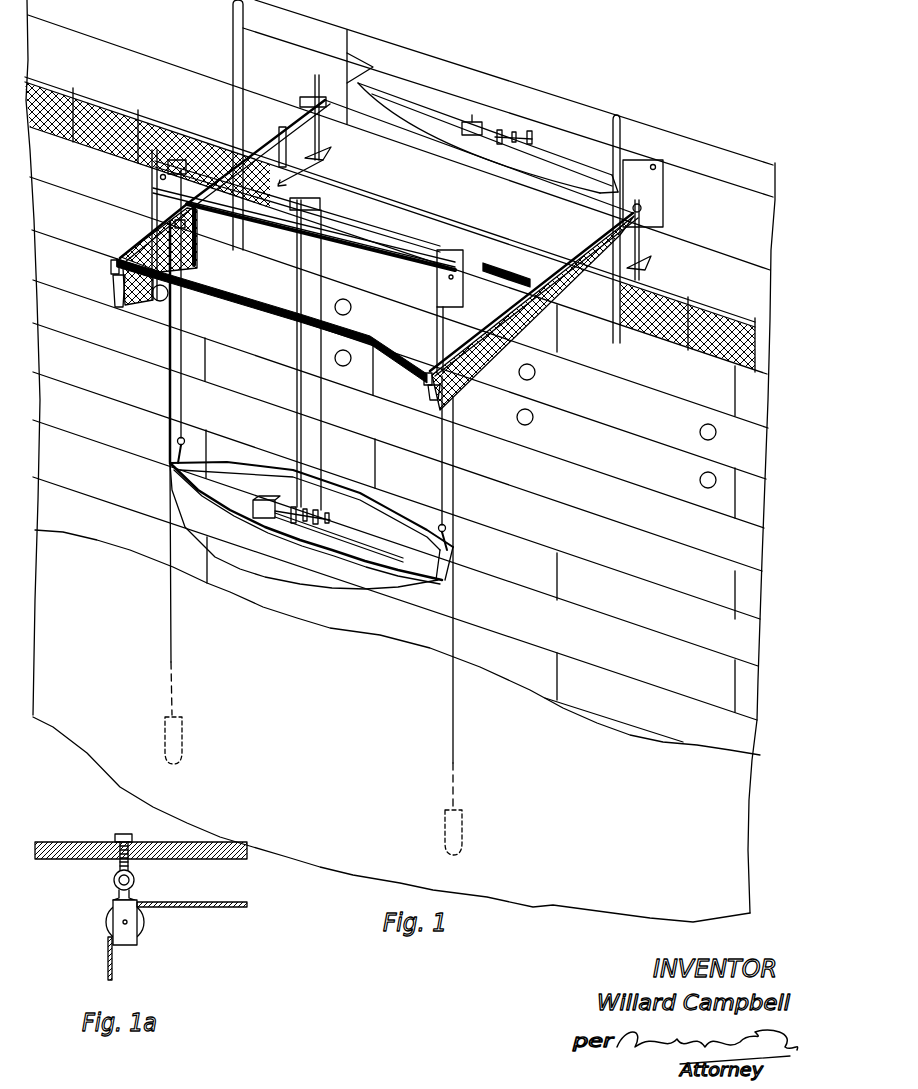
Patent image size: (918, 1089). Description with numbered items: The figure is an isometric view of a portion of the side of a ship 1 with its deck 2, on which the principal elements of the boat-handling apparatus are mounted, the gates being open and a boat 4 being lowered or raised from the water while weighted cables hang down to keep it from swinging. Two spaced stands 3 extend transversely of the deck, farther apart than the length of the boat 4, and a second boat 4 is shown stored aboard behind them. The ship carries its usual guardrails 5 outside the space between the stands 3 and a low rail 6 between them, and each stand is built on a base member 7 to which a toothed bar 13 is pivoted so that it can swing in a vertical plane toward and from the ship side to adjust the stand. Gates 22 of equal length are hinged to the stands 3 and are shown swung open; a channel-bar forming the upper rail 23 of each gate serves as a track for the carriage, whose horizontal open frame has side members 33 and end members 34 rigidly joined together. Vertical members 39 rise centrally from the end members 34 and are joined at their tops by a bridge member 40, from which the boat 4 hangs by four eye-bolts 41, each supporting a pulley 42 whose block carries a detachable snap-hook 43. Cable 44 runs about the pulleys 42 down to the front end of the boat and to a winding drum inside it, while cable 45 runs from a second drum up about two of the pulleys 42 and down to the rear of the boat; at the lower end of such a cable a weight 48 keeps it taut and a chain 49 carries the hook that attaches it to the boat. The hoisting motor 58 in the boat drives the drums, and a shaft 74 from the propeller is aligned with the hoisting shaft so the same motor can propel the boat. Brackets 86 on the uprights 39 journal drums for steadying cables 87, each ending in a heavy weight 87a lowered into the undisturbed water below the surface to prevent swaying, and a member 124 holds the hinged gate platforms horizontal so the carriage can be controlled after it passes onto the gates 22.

In FIG. 1, the side of a ship 1 is at (400, 461).
In FIG. 1, the deck 2 is at (393, 185).
In FIG. 1, the stands 3 is at (290, 128).
In FIG. 1, the boat 4 is at (438, 138).
In FIG. 1, the guardrails 5 is at (107, 107).
In FIG. 1, the low rail 6 is at (506, 267).
In FIG. 1, the base member 7 is at (288, 180).
In FIG. 1, the bars 13 is at (315, 80).
In FIG. 1, the gates 22 is at (205, 248).
In FIG. 1, the upper rail 23 is at (111, 268).
In FIG. 1, the side members 33 is at (254, 303).
In FIG. 1, the end members 34 is at (147, 237).
In FIG. 1, the vertical members 39 is at (152, 196).
In FIG. 1, the bridge member 40 is at (347, 214).
In FIG. 1A, the bridge member 40 is at (85, 859).
In FIG. 1A, the eye-bolts 41 is at (130, 866).
In FIG. 1, the pulley 42 is at (455, 252).
In FIG. 1A, the pulley 42 is at (140, 925).
In FIG. 1A, the snap-hook 43 is at (136, 884).
In FIG. 1, the cable 44 is at (184, 358).
In FIG. 1A, the cable 44 is at (114, 968).
In FIG. 1, the cable 45 is at (323, 405).
In FIG. 1, the weight 48 is at (178, 440).
In FIG. 1, the chain 49 is at (178, 453).
In FIG. 1, the hoisting motor 58 is at (472, 124).
In FIG. 1, the shaft 74 is at (376, 552).
In FIG. 1, the brackets 86 is at (160, 177).
In FIG. 1, the steadying cables 87 is at (169, 387).
In FIG. 1, the weight 87a is at (180, 736).
In FIG. 1, the member 124 is at (113, 293).